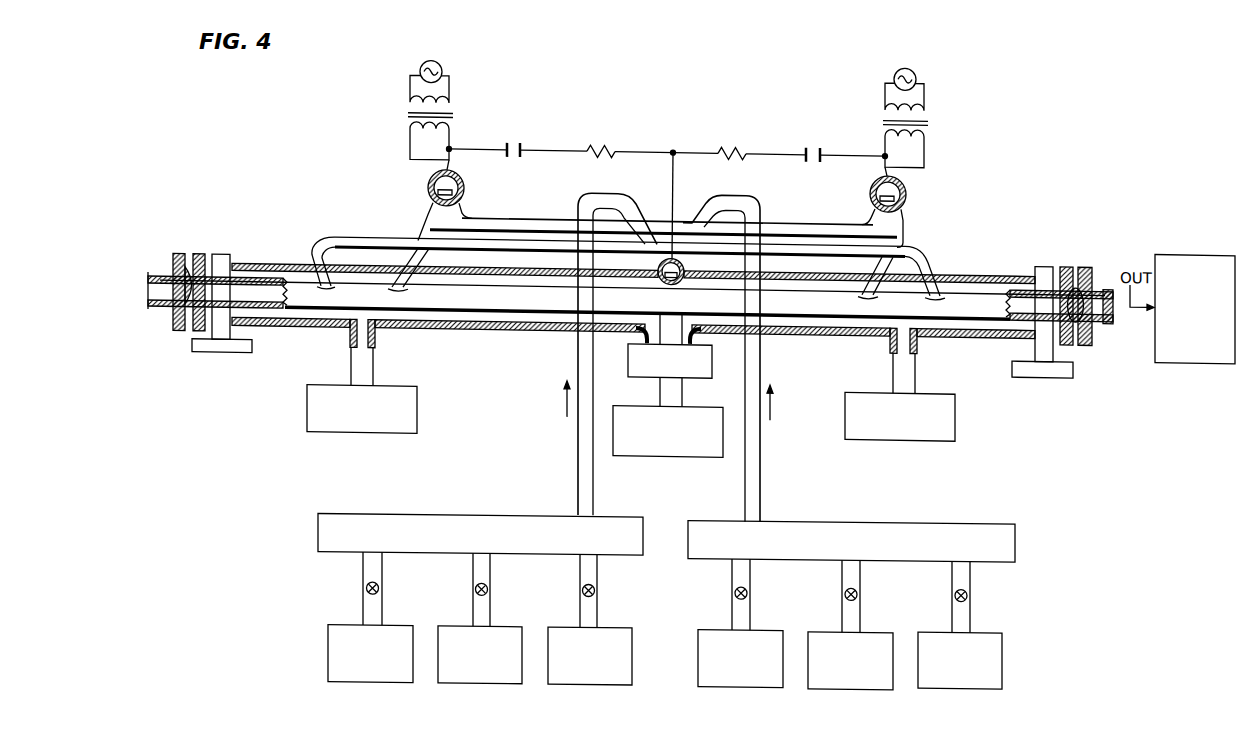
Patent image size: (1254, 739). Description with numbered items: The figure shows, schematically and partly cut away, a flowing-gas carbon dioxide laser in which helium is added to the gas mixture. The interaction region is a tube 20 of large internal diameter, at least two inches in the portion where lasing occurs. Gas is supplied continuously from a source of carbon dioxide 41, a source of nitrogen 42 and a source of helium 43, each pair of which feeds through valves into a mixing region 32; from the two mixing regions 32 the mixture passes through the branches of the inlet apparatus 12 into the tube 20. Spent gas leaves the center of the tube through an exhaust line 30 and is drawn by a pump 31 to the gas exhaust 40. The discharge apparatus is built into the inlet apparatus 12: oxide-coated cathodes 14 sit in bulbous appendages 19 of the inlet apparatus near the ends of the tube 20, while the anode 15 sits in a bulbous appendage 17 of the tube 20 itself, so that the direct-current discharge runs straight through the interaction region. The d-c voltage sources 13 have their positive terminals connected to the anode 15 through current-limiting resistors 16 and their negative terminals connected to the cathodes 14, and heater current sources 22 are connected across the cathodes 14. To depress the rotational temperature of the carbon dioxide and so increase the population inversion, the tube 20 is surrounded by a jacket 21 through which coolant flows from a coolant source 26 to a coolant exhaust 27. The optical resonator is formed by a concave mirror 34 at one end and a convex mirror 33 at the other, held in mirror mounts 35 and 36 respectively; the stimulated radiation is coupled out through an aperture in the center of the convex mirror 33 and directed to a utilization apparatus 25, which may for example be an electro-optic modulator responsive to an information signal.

The inlet apparatus 12 is at (533, 243).
The d-c voltage source 13 is at (517, 142).
The oxide-coated cathode 14 is at (462, 193).
The anode 15 is at (677, 275).
The current-limiting resistor 16 is at (592, 143).
The bulbous appendage 17 is at (665, 277).
The bulbous appendage 19 is at (428, 181).
The tube 20 is at (243, 291).
The jacket 21 is at (843, 321).
The heater current source 22 is at (382, 124).
The utilization apparatus 25 is at (1193, 240).
The coolant source 26 is at (893, 430).
The coolant exhaust 27 is at (375, 435).
The gas exhaust conduit 30 is at (658, 389).
The pump 31 is at (697, 367).
The mixing region 32 is at (318, 532).
The mirror 33 is at (1093, 306).
The mirror 34 is at (172, 313).
The mirror mount 35 is at (183, 256).
The mirror mount 36 is at (1076, 254).
The exhaust 40 is at (663, 450).
The source of carbon dioxide 41 is at (703, 627).
The source of nitrogen 42 is at (502, 624).
The source of helium 43 is at (403, 624).